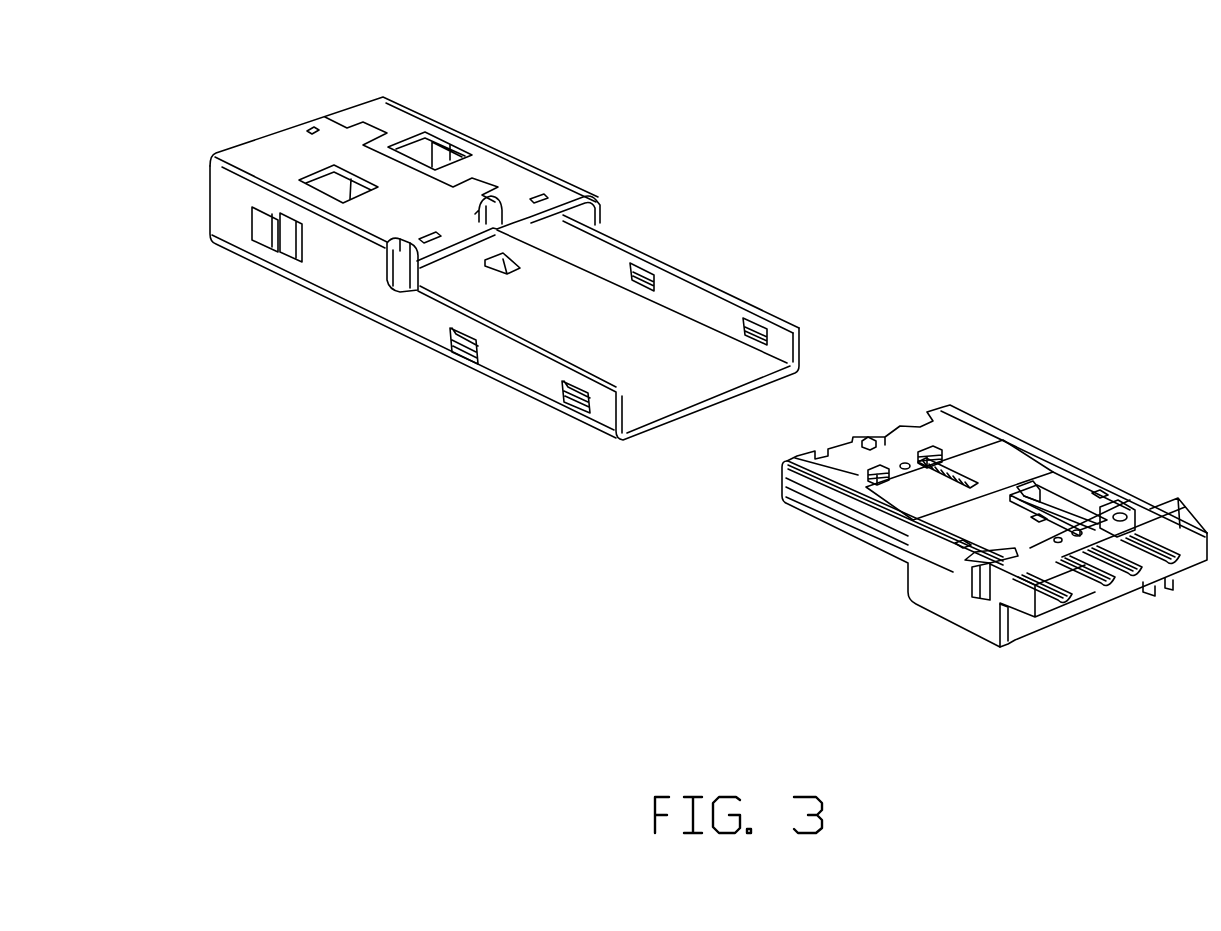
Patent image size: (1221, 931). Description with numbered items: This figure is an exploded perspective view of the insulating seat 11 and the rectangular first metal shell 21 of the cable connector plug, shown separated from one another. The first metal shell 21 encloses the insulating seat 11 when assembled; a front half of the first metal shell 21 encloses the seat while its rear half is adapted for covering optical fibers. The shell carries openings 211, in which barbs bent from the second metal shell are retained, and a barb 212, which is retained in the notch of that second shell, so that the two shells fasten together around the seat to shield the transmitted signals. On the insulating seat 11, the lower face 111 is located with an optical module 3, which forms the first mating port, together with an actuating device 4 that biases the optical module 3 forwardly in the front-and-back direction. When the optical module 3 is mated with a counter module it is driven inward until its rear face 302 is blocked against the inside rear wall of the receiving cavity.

The first metal shell 21 is at (400, 123).
The openings 211 is at (540, 196).
The barb 212 is at (490, 203).
The optical module 3 is at (900, 428).
The rear face 302 is at (862, 482).
The actuating device 4 is at (948, 478).
The insulating seat 11 is at (935, 597).
The lower face 111 is at (1073, 485).